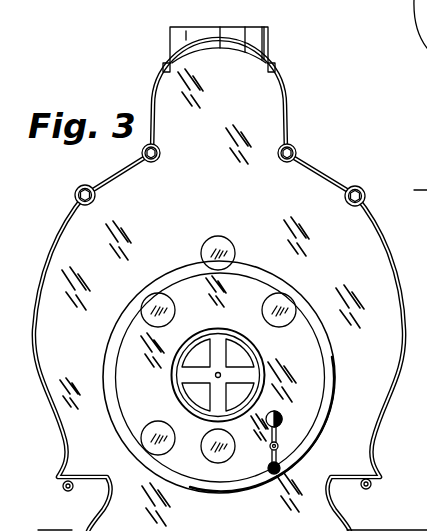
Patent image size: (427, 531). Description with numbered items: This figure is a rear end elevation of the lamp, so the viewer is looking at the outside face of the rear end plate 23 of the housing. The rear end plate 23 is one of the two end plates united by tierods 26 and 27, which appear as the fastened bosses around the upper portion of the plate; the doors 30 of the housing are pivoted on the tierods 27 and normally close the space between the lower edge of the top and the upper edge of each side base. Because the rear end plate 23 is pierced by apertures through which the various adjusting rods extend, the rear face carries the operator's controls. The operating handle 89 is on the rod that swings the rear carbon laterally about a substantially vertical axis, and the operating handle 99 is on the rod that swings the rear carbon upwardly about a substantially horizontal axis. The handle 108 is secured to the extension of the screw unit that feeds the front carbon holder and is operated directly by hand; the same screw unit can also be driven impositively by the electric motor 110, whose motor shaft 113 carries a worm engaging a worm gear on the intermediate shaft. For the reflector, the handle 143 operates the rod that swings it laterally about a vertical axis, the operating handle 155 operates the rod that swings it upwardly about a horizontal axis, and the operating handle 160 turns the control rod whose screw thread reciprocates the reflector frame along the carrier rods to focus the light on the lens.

The rear end plate 23 is at (64, 249).
The tierods 26 is at (146, 148).
The tierods 27 is at (83, 190).
The doors 30 is at (67, 490).
The operating handle 89 is at (287, 300).
The operating handle 99 is at (203, 448).
The handle 108 is at (280, 456).
The electric motor 110 is at (213, 330).
The motor shaft 113 is at (215, 375).
The handle 143 is at (150, 303).
The operating handle 155 is at (215, 243).
The operating handle 160 is at (155, 427).